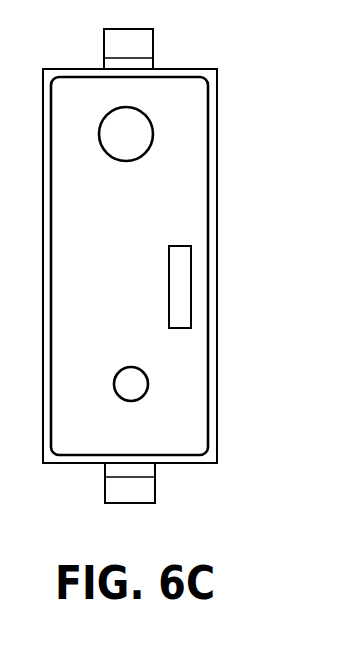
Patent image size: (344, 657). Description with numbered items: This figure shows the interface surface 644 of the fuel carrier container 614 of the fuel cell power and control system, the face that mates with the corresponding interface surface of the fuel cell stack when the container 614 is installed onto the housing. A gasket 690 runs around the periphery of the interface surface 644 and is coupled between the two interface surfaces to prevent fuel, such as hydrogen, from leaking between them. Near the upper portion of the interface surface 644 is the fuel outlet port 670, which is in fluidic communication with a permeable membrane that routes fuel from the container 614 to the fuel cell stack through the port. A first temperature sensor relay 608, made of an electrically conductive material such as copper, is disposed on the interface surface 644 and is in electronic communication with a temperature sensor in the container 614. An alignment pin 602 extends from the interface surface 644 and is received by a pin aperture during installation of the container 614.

The fuel carrier container 614 is at (194, 70).
The gasket 690 is at (206, 173).
The interface surface 644 is at (153, 218).
The fuel outlet port 670 is at (117, 122).
The first temperature sensor relay 608 is at (168, 288).
The alignment pin 602 is at (128, 383).